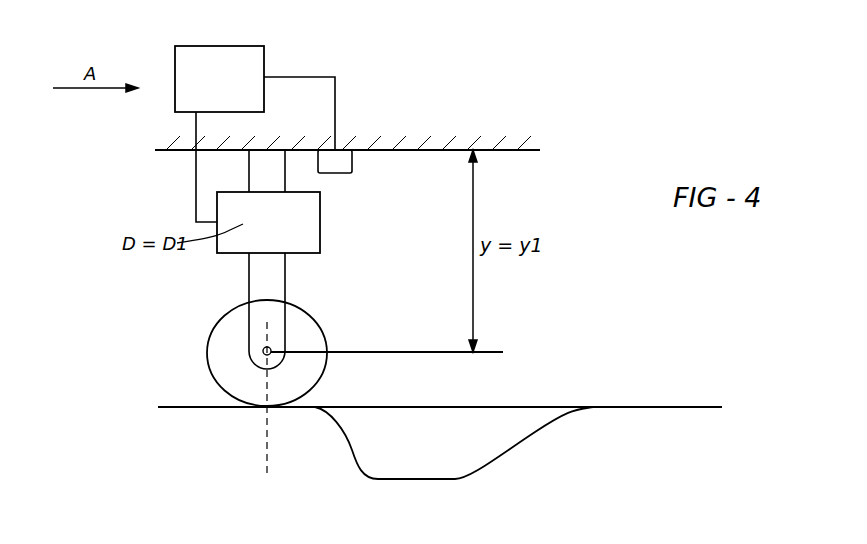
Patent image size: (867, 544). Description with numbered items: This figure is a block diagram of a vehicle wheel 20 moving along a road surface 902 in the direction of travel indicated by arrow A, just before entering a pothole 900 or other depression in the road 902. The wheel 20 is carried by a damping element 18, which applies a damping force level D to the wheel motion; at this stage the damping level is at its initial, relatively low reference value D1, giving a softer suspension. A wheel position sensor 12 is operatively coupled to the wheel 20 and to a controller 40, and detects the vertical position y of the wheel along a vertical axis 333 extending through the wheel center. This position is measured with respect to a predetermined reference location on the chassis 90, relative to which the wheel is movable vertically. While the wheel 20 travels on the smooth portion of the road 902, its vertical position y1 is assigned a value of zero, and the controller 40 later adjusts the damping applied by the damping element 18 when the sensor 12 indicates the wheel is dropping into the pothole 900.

The wheel position sensor 12 is at (345, 173).
The damping element 18 is at (228, 253).
The vehicle wheel 20 is at (217, 357).
The controller 40 is at (235, 46).
The chassis 90 is at (443, 117).
The vertical axis 333 is at (267, 448).
The pothole 900 is at (472, 428).
The road surface 902 is at (638, 407).